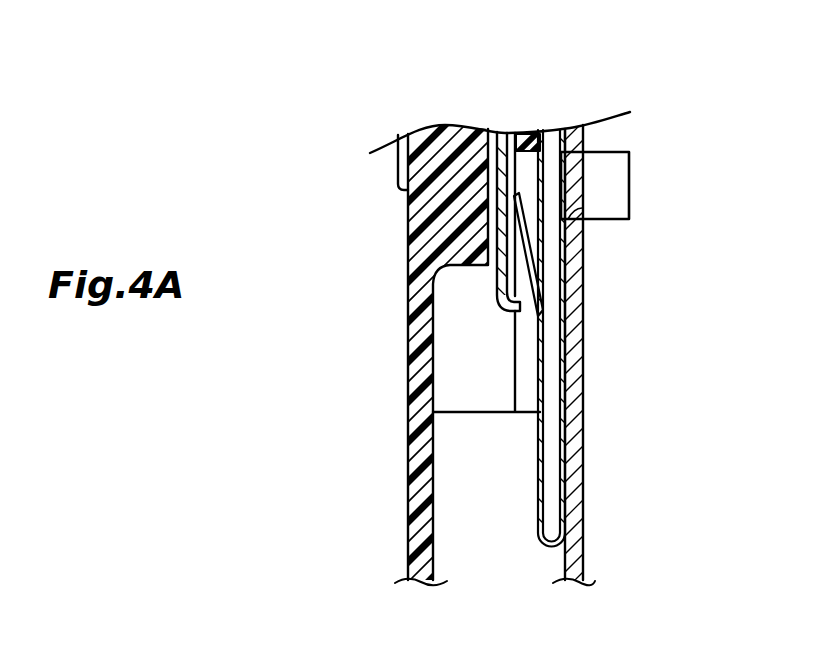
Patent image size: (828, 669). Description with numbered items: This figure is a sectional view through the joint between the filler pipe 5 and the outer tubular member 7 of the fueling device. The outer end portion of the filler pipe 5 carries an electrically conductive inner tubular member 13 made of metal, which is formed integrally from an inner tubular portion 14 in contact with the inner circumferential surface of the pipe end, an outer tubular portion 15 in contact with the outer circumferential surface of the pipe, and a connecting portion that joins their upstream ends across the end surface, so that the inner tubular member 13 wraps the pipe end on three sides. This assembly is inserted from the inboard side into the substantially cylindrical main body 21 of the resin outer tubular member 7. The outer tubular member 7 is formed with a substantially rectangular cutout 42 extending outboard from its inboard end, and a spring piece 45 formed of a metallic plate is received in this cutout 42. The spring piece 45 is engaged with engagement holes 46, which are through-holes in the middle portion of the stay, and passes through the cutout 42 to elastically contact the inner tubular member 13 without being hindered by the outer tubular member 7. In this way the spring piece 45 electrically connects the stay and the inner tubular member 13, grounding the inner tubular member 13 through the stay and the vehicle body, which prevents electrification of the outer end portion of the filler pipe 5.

The filler pipe 5 is at (414, 286).
The outer tubular member 7 is at (519, 133).
The inner tubular member 13 is at (510, 56).
The inner tubular portion 14 is at (402, 168).
The outer tubular portion 15 is at (503, 143).
The main body 21 is at (539, 168).
The cutout 42 is at (530, 152).
The spring piece 45 is at (567, 362).
The engagement holes 46 is at (568, 219).